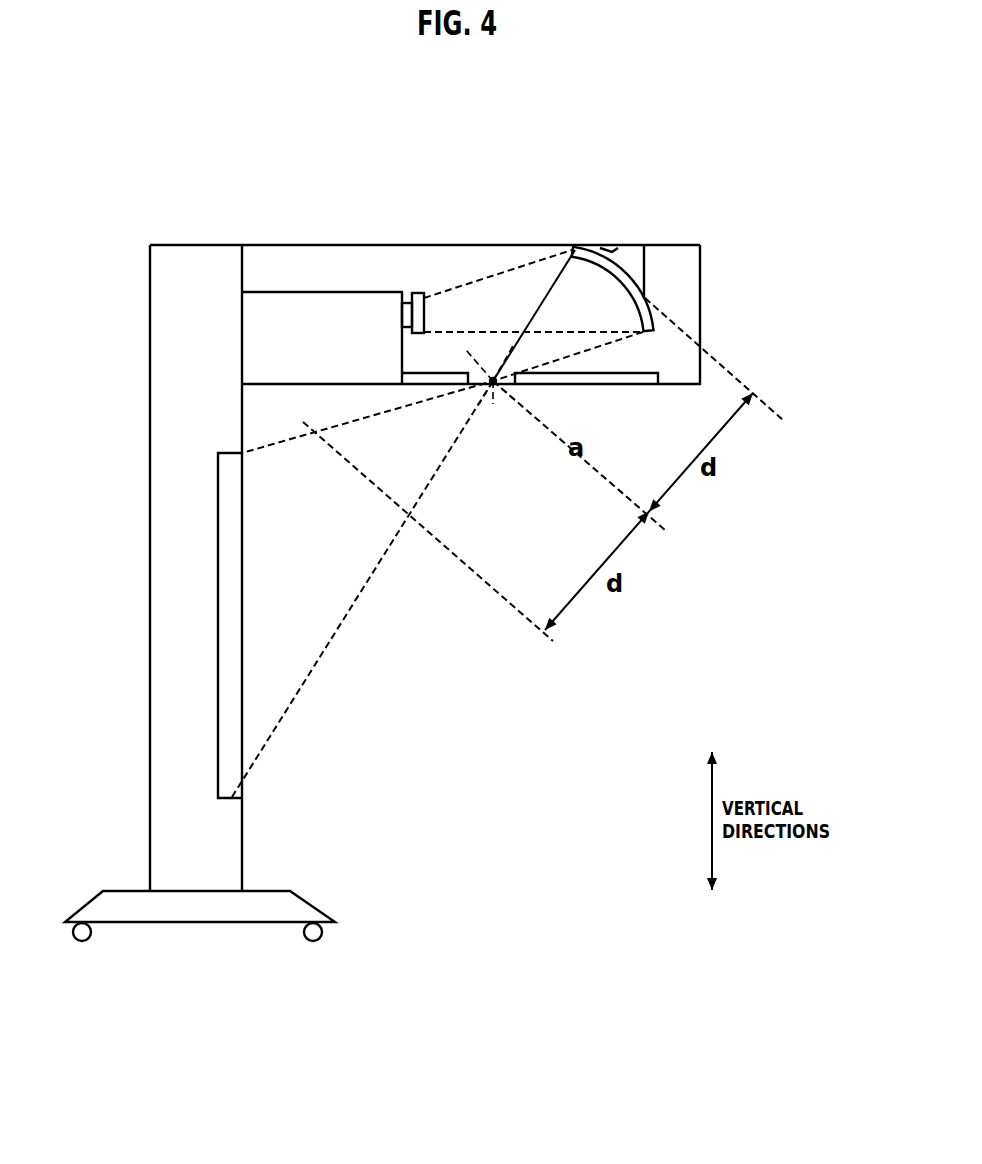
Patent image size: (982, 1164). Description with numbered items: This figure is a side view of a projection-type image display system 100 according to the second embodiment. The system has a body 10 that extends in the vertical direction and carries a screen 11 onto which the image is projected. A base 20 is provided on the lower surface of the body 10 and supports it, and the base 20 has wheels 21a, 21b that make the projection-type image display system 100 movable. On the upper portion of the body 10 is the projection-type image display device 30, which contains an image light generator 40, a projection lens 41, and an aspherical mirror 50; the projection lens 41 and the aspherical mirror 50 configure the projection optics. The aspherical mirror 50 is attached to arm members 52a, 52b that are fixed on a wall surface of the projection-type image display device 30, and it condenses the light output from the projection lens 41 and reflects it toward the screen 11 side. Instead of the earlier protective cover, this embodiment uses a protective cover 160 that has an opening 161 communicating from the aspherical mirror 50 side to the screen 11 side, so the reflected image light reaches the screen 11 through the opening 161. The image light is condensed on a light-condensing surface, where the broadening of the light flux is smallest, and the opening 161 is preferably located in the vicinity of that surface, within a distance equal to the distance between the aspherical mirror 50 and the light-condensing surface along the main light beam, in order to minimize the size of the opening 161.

The projection-type image display system 100 is at (575, 176).
The body 10 is at (175, 360).
The screen 11 is at (230, 734).
The base 20 is at (297, 906).
The wheel 21a is at (85, 942).
The wheel 21b is at (315, 942).
The projection-type image display device 30 is at (726, 350).
The image light generator 40 is at (316, 288).
The projection lens 41 is at (418, 296).
The aspherical mirror 50 is at (648, 305).
The arm member 52a is at (620, 246).
The arm member 52b is at (647, 258).
The protective cover 160 is at (648, 386).
The opening 161 is at (495, 392).